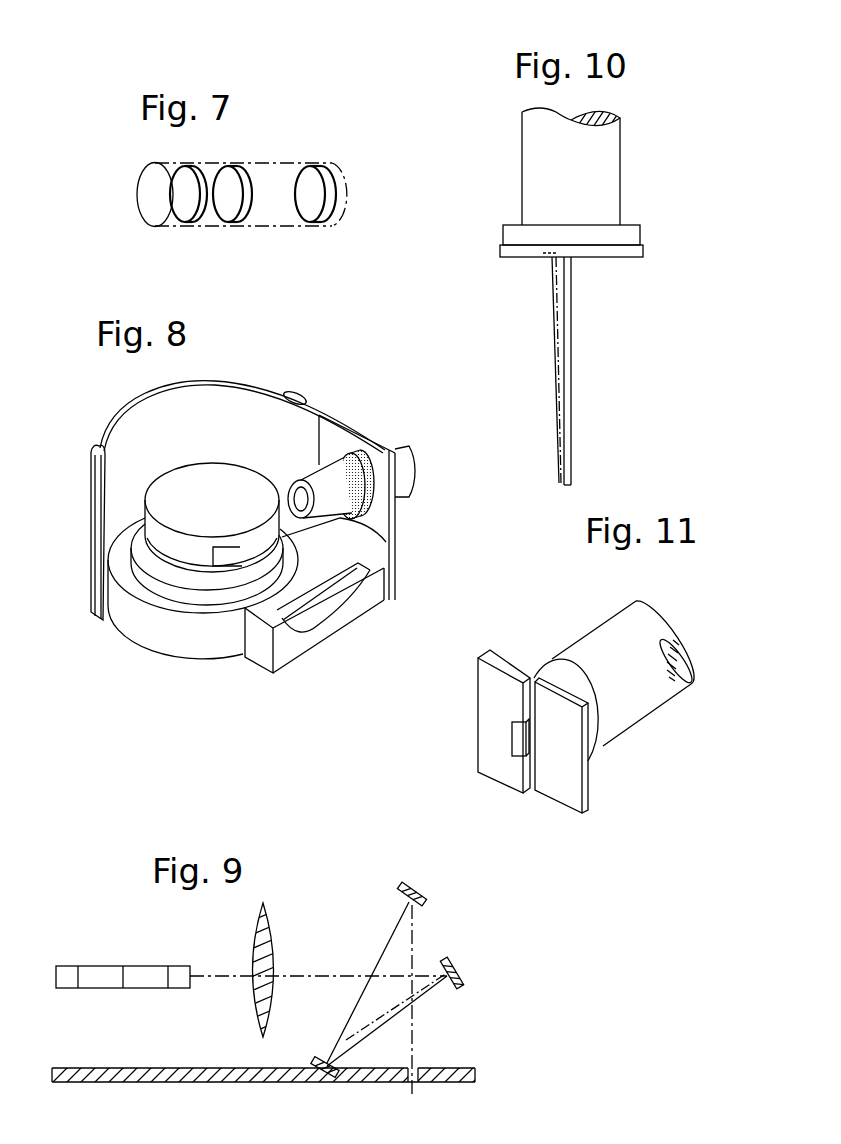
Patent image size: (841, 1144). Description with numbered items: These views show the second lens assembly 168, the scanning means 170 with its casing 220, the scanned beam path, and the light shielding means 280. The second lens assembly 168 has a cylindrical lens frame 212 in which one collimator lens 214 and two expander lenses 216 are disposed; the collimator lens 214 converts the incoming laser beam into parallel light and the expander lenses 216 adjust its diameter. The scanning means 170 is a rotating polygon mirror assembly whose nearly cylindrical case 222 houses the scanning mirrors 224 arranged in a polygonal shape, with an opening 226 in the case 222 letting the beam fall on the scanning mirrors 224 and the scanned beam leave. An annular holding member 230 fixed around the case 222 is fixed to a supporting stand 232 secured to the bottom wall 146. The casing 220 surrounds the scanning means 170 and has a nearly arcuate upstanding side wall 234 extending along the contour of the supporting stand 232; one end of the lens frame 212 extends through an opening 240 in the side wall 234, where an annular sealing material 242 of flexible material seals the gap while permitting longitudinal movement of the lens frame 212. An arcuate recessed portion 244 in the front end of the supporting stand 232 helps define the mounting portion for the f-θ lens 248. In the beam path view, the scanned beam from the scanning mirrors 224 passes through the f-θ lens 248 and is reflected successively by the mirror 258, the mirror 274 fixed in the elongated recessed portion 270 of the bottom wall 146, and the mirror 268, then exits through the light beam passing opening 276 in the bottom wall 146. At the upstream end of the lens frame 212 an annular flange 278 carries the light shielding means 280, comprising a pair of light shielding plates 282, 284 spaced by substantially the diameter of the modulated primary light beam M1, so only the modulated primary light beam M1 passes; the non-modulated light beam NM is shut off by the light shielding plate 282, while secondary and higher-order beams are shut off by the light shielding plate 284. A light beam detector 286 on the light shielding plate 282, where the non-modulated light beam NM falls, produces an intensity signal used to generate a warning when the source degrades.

In FIG. 7, the cylindrical lens frame 212 is at (282, 160).
In FIG. 10, the cylindrical lens frame 212 is at (613, 158).
In FIG. 8, the cylindrical lens frame 212 is at (387, 541).
In FIG. 11, the cylindrical lens frame 212 is at (645, 702).
In FIG. 7, the collimator lens 214 is at (315, 214).
In FIG. 7, the expander lenses 216 is at (228, 214).
In FIG. 10, the second lens assembly 168 is at (518, 164).
In FIG. 8, the second lens assembly 168 is at (403, 440).
In FIG. 11, the second lens assembly 168 is at (605, 614).
In FIG. 10, the annular flange 278 is at (633, 237).
In FIG. 11, the annular flange 278 is at (590, 761).
In FIG. 10, the light shielding means 280 is at (513, 266).
In FIG. 11, the light shielding means 280 is at (472, 744).
In FIG. 10, the light shielding plate 282 is at (529, 258).
In FIG. 11, the light shielding plate 282 is at (483, 678).
In FIG. 10, the light shielding plate 284 is at (625, 258).
In FIG. 11, the light shielding plate 284 is at (573, 807).
In FIG. 10, the light beam detector 286 is at (550, 258).
In FIG. 11, the light beam detector 286 is at (513, 743).
In FIG. 10, the modulated primary light beam M1 is at (573, 378).
In FIG. 10, the non-modulated light beam NM is at (556, 378).
In FIG. 8, the scanning means 170 is at (233, 450).
In FIG. 8, the casing 220 is at (343, 409).
In FIG. 8, the case 222 is at (172, 490).
In FIG. 8, the opening 226 is at (237, 560).
In FIG. 8, the annular holding member 230 is at (168, 575).
In FIG. 8, the supporting stand 232 is at (235, 652).
In FIG. 8, the side wall 234 is at (213, 382).
In FIG. 8, the opening 240 is at (366, 504).
In FIG. 8, the annular sealing material 242 is at (337, 470).
In FIG. 8, the arcuate recessed portion 244 is at (343, 598).
In FIG. 9, the scanning mirrors 224 is at (95, 973).
In FIG. 9, the f-θ lens 248 is at (274, 928).
In FIG. 9, the bottom wall 146 is at (193, 1066).
In FIG. 9, the mirror 268 is at (406, 883).
In FIG. 9, the mirror 258 is at (463, 985).
In FIG. 9, the elongated recessed portion 270 is at (332, 1078).
In FIG. 9, the mirror 274 is at (322, 1058).
In FIG. 9, the light beam passing opening 276 is at (418, 1082).